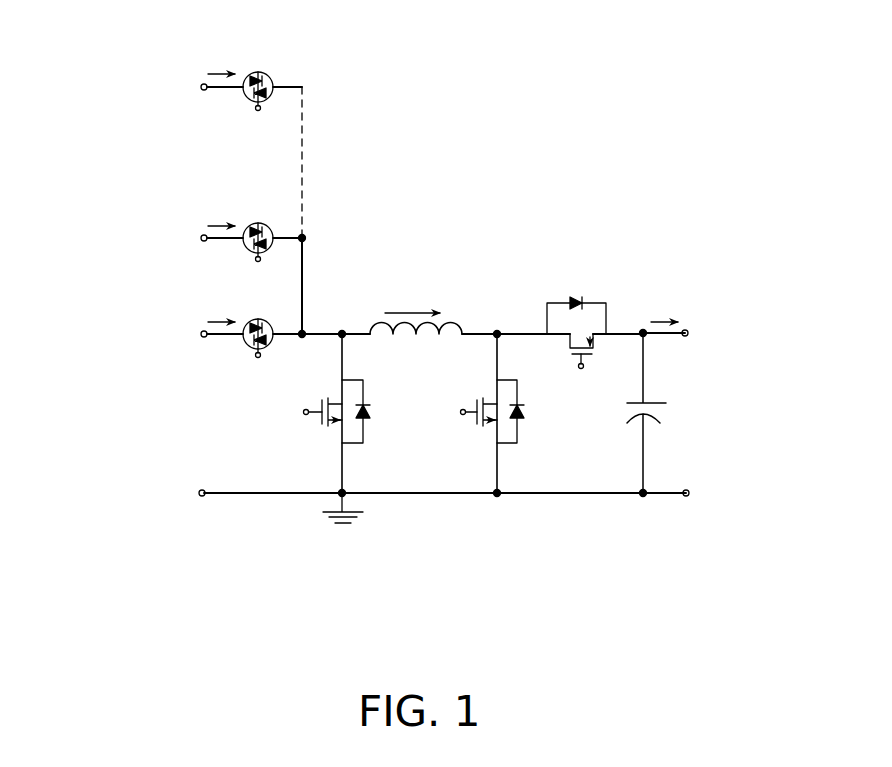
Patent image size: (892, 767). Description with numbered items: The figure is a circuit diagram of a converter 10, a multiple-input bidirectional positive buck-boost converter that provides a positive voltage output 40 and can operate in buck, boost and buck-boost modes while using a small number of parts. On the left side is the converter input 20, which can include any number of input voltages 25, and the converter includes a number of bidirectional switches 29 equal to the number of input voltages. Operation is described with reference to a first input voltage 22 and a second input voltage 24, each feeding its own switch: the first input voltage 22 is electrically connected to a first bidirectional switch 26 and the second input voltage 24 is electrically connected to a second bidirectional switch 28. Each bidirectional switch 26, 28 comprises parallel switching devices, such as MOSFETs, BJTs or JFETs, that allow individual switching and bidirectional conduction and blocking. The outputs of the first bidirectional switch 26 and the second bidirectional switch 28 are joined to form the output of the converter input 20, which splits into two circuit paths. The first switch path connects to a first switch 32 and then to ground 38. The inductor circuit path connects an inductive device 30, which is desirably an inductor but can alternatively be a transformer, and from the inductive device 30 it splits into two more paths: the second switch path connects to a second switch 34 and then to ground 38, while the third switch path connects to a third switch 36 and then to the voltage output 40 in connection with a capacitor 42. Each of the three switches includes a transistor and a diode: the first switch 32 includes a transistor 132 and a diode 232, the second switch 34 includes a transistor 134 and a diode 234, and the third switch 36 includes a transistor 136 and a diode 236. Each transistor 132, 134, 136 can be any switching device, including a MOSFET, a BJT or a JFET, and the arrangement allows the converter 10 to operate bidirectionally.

The converter 10 is at (582, 137).
The converter input 20 is at (331, 191).
The first input voltage 22 is at (203, 332).
The second input voltage 24 is at (203, 236).
The input voltage 25 is at (203, 84).
The first bidirectional switch 26 is at (258, 358).
The second bidirectional switch 28 is at (258, 222).
The bidirectional switches 29 is at (263, 70).
The inductive device 30 is at (455, 322).
The first switch 32 is at (310, 450).
The transistor 132 is at (303, 412).
The diode 232 is at (370, 418).
The second switch 34 is at (507, 458).
The transistor 134 is at (463, 415).
The diode 234 is at (524, 418).
The third switch 36 is at (598, 274).
The transistor 136 is at (583, 350).
The diode 236 is at (578, 302).
The ground 38 is at (336, 525).
The voltage output 40 is at (704, 417).
The capacitor 42 is at (648, 402).